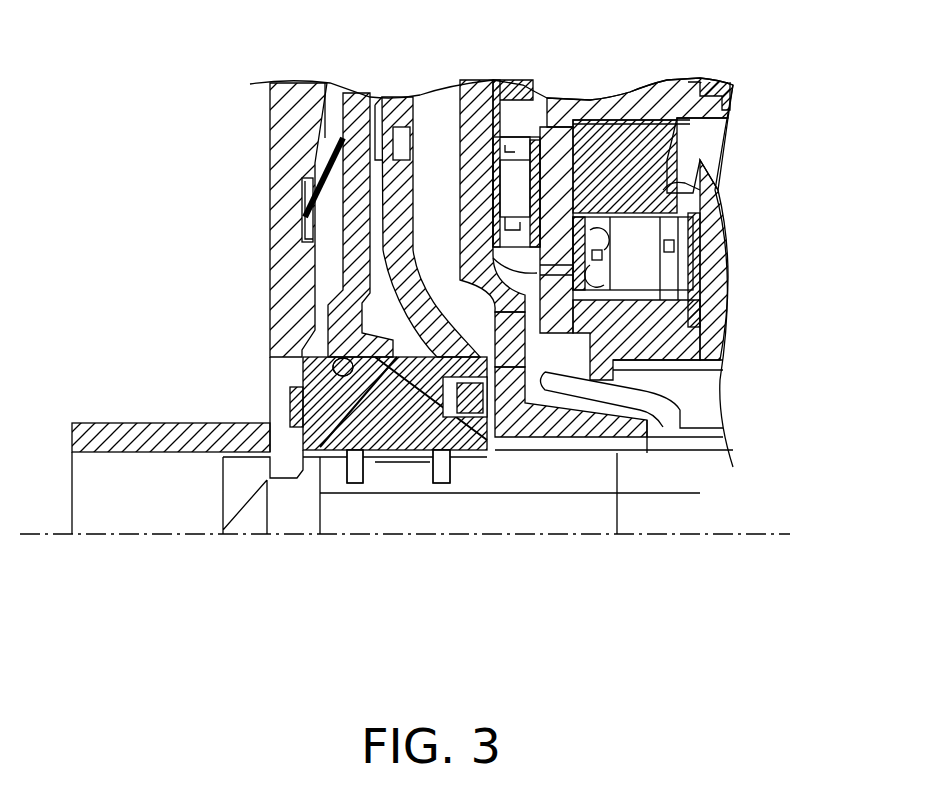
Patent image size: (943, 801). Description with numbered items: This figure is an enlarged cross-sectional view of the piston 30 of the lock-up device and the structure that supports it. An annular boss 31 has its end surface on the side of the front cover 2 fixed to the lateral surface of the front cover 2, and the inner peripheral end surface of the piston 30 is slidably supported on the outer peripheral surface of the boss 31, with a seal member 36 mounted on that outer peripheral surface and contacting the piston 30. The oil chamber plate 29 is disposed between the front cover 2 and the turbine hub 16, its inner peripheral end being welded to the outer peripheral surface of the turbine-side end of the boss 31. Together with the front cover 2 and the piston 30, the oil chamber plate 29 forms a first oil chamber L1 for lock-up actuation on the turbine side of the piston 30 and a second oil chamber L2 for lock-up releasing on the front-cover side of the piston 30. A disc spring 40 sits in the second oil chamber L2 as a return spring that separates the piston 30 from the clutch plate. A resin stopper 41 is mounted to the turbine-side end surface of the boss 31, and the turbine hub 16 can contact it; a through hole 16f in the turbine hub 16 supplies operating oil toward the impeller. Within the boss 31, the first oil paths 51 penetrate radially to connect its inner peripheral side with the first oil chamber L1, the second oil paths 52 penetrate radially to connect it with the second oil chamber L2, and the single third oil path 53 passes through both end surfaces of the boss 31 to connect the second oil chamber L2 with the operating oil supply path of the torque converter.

The front cover 2 is at (290, 153).
The disc spring 40 is at (313, 167).
The first oil chamber L1 is at (373, 305).
The second oil chamber L2 is at (322, 321).
The seal member 36 is at (307, 366).
The piston 30 is at (352, 108).
The oil chamber plate 29 is at (395, 103).
The turbine hub 16 is at (683, 403).
The through hole 16f is at (503, 328).
The stopper 41 is at (480, 397).
The boss 31 is at (423, 420).
The first oil paths 51 is at (313, 445).
The second oil paths 52 is at (385, 460).
The third oil path 53 is at (423, 457).